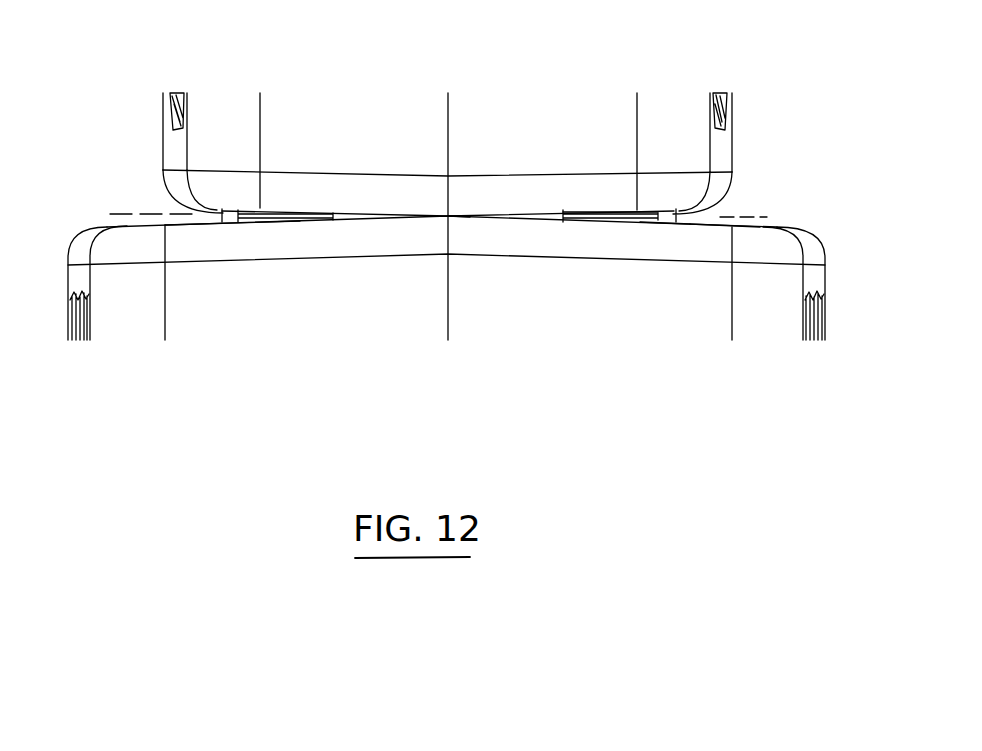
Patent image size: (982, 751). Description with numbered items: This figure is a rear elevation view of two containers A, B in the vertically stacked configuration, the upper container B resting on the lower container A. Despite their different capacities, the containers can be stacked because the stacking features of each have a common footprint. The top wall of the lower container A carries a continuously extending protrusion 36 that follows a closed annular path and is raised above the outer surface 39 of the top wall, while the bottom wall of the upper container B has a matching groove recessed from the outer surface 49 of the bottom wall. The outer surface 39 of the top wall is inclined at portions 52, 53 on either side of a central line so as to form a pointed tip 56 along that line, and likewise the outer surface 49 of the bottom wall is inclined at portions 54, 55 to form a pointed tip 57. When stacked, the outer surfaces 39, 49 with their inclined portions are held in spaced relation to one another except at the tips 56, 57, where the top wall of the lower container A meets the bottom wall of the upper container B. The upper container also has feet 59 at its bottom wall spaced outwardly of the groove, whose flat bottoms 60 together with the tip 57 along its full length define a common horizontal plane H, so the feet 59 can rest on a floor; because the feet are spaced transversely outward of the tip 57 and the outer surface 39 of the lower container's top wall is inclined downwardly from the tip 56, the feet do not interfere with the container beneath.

The container A is at (829, 289).
The container B is at (735, 140).
The common horizontal plane H is at (119, 214).
The protrusion 36 is at (665, 223).
The outer surface of the top wall 39 is at (755, 225).
The outer surface of the bottom wall 49 is at (692, 215).
The inclined portion of the top wall 52 is at (547, 213).
The inclined portion of the top wall 53 is at (350, 213).
The inclined portion of the bottom wall 54 is at (712, 227).
The inclined portion of the bottom wall 55 is at (197, 226).
The tip of the top wall 56 is at (454, 221).
The tip of the bottom wall 57 is at (452, 214).
The feet 59 is at (610, 212).
The bottoms of the feet 60 is at (302, 221).